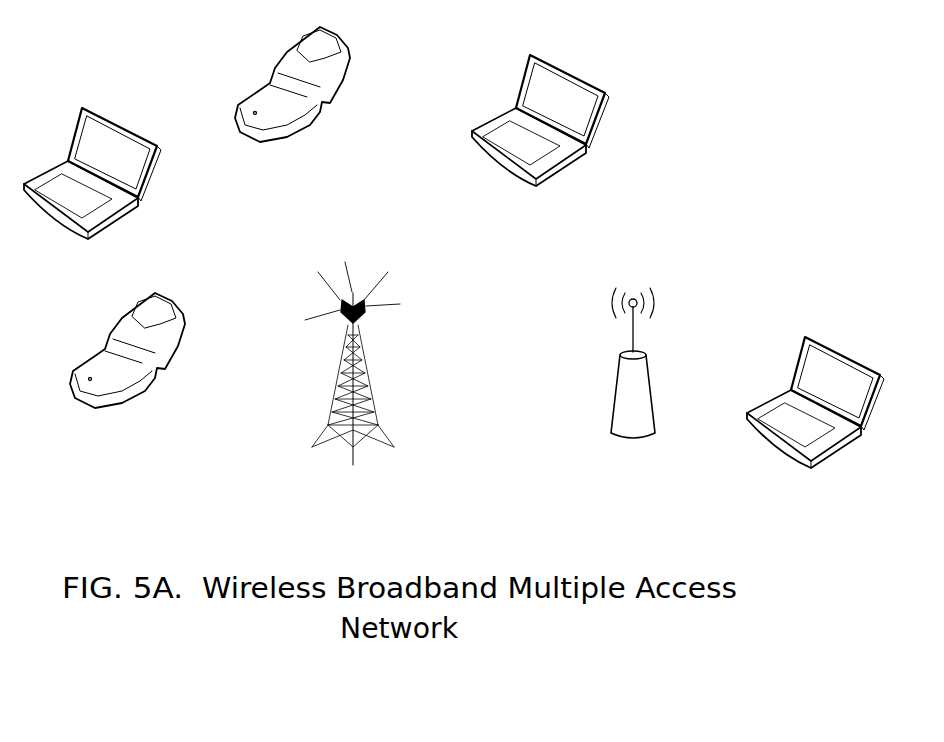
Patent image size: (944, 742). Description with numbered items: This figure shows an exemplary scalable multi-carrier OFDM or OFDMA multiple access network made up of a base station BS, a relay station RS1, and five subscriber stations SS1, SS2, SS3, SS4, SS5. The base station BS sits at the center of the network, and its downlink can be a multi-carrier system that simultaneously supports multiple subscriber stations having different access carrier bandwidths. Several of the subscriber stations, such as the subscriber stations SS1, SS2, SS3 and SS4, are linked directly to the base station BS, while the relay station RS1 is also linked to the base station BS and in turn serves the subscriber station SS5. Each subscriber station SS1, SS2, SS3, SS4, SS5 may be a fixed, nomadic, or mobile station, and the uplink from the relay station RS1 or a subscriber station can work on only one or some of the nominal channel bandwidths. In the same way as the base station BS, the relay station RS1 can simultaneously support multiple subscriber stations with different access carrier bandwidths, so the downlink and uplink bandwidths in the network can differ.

The subscriber station SS1 is at (292, 99).
The subscriber station SS2 is at (92, 182).
The subscriber station SS3 is at (127, 365).
The subscriber station SS4 is at (540, 130).
The subscriber station SS5 is at (815, 412).
The base station BS is at (352, 382).
The relay station RS1 is at (632, 380).